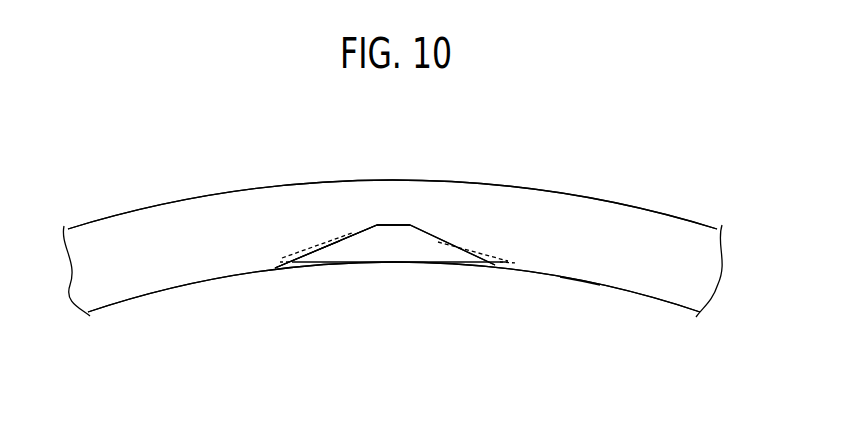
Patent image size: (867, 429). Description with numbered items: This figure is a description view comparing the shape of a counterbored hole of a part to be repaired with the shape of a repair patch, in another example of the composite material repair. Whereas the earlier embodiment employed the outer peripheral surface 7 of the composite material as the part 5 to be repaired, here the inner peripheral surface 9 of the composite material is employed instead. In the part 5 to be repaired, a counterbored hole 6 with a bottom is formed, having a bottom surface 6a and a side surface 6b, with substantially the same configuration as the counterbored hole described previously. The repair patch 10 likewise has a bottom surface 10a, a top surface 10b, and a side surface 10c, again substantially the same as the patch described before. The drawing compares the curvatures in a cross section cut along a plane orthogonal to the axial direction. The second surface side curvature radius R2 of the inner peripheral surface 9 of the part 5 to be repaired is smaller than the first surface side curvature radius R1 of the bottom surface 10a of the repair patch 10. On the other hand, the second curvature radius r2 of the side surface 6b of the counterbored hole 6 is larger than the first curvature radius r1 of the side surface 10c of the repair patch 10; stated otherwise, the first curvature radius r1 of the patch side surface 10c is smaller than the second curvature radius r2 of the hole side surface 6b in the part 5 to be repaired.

The part to be repaired 5 is at (246, 275).
The outer peripheral surface 7 is at (201, 197).
The inner peripheral surface 9 is at (190, 285).
The repair patch 10 is at (463, 241).
The bottom surface 10a is at (309, 267).
The top surface 10b is at (394, 225).
The side surface 10c is at (491, 256).
The counterbored hole 6 is at (446, 265).
The bottom surface 6a is at (398, 227).
The side surface 6b is at (356, 236).
The first curvature radius r1 is at (325, 240).
The second curvature radius r2 is at (339, 246).
The first surface side curvature radius R1 is at (481, 264).
The second surface side curvature radius R2 is at (581, 280).